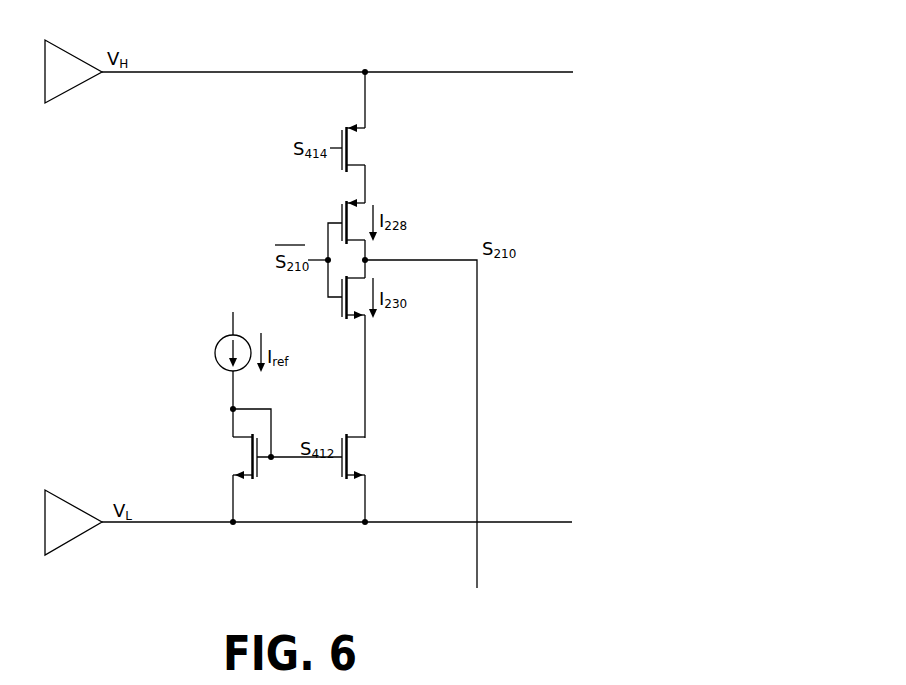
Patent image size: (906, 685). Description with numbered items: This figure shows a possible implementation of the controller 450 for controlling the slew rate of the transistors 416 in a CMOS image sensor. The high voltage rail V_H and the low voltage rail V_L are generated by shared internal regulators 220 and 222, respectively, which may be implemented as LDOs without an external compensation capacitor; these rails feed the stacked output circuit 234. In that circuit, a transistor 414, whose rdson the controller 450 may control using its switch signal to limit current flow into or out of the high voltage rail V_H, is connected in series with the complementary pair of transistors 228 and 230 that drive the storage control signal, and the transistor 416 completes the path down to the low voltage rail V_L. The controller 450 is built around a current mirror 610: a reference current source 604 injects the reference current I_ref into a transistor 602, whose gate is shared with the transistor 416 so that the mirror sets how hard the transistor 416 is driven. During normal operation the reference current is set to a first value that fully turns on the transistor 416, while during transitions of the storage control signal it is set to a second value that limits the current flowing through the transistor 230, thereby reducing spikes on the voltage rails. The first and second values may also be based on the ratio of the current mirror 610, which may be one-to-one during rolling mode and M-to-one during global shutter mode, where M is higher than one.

The internal regulator 220 is at (58, 46).
The internal regulator 222 is at (70, 541).
The output stage 234 is at (170, 175).
The controller 450 is at (106, 352).
The reference current source 604 is at (217, 345).
The transistor 602 is at (251, 462).
The current mirror 610 is at (383, 403).
The transistor 414 is at (365, 164).
The pull-up transistor 228 is at (341, 214).
The pull-down transistor 230 is at (341, 314).
The transistor 416 is at (347, 462).